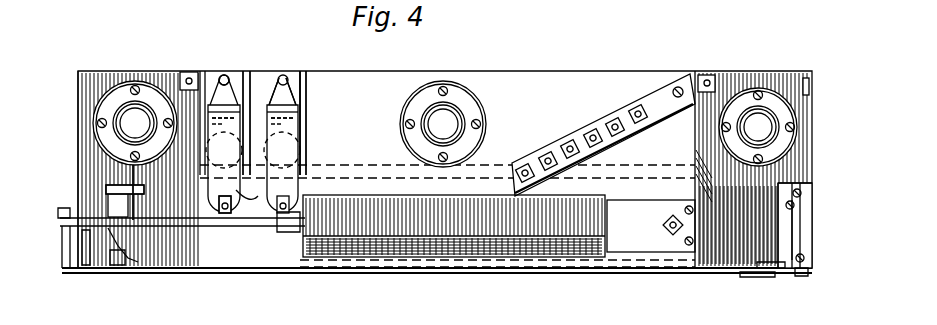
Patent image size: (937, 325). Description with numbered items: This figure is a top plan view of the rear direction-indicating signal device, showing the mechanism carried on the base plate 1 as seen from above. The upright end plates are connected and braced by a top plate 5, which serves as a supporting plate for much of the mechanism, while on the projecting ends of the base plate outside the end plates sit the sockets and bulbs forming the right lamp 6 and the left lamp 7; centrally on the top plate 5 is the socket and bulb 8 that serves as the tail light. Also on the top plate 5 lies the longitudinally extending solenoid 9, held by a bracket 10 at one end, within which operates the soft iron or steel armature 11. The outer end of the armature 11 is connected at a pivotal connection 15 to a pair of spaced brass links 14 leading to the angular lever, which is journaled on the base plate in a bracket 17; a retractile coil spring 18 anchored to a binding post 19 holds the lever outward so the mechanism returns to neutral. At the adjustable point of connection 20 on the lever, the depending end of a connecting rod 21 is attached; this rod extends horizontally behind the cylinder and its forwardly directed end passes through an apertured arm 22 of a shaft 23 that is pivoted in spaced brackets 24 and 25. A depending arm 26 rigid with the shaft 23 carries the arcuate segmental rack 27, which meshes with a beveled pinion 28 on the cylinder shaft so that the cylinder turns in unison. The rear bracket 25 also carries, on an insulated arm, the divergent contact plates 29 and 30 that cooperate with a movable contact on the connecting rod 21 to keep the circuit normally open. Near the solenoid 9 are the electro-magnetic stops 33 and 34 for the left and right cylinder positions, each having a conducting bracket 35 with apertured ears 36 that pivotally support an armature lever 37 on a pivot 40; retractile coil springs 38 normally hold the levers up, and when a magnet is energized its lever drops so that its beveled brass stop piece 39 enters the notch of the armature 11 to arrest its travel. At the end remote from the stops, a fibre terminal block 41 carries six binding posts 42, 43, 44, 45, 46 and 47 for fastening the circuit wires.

The base plate 1 is at (732, 72).
The top plate 5 is at (337, 82).
The right lamp 6 is at (128, 118).
The left lamp 7 is at (758, 118).
The tail light bulb 8 is at (445, 122).
The solenoid 9 is at (378, 256).
The bracket 10 is at (651, 226).
The armature 11 is at (297, 232).
The links 14 is at (84, 215).
The pivotal connection 15 is at (145, 213).
The bracket 17 is at (126, 262).
The retractile coil spring 18 is at (100, 250).
The binding post 19 is at (78, 232).
The point of connection 20 is at (138, 256).
The connecting rod 21 is at (345, 170).
The apertured arm 22 is at (778, 268).
The shaft 23 is at (787, 240).
The bracket 24 is at (808, 170).
The rear bracket 25 is at (800, 275).
The depending arm 26 is at (801, 192).
The segmental rack 27 is at (778, 222).
The beveled pinion 28 is at (694, 155).
The contact plate 29 is at (770, 274).
The contact plate 30 is at (804, 258).
The electro-magnetic stop 33 is at (292, 67).
The electro-magnetic stop 34 is at (243, 100).
The bracket 35 is at (262, 75).
The apertured ears 36 is at (300, 115).
The armature lever 37 is at (230, 186).
The retractile coil spring 38 is at (222, 76).
The stop piece 39 is at (233, 227).
The pivot 40 is at (253, 144).
The terminal block 41 is at (662, 93).
The binding post 42 is at (525, 165).
The binding post 43 is at (548, 153).
The binding post 44 is at (570, 141).
The binding post 45 is at (593, 130).
The binding post 46 is at (613, 119).
The binding post 47 is at (638, 106).